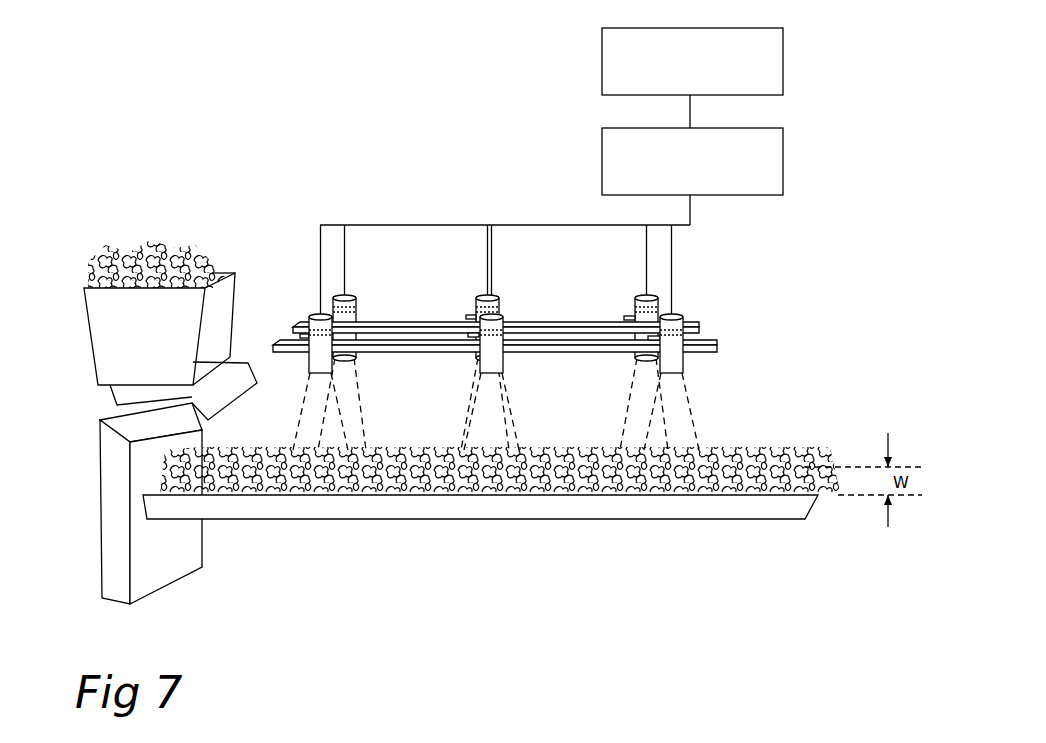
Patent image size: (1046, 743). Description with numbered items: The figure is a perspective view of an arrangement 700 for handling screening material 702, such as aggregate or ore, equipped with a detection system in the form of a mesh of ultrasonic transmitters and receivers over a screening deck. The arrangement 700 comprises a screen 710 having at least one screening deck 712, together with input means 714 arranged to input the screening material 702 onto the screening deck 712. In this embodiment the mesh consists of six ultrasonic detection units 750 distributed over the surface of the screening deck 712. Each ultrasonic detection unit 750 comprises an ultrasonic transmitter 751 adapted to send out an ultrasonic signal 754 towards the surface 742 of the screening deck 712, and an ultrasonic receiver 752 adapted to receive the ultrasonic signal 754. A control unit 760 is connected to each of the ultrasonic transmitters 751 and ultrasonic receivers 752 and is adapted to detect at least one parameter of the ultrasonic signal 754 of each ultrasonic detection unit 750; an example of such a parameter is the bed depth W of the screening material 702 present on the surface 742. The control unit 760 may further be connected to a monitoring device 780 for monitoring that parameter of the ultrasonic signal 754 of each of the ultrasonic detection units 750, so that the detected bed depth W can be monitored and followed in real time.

The arrangement 700 is at (175, 88).
The screening material 702 is at (152, 218).
The screen 710 is at (100, 499).
The screening deck 712 is at (795, 535).
The input means 714 is at (86, 306).
The surface 742 is at (722, 415).
The ultrasonic detection unit 750 is at (331, 306).
The ultrasonic transmitter 751 is at (353, 306).
The ultrasonic receiver 752 is at (354, 311).
The ultrasonic signal 754 is at (343, 397).
The control unit 760 is at (692, 176).
The monitoring device 780 is at (692, 78).